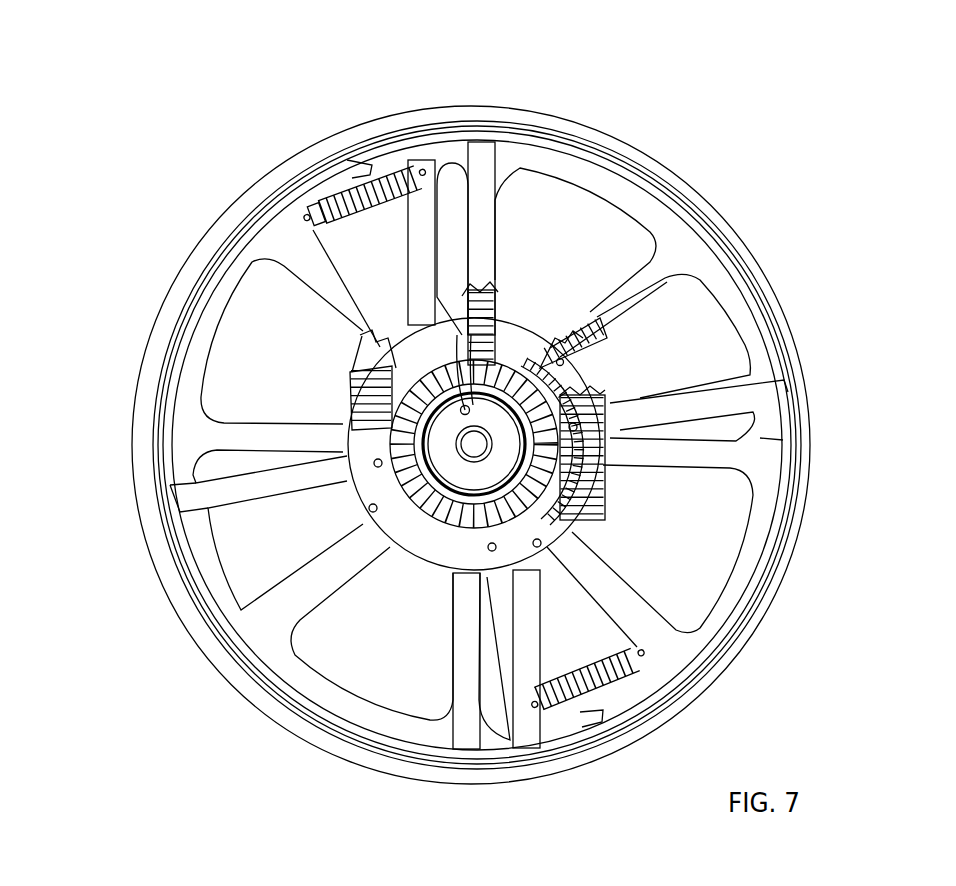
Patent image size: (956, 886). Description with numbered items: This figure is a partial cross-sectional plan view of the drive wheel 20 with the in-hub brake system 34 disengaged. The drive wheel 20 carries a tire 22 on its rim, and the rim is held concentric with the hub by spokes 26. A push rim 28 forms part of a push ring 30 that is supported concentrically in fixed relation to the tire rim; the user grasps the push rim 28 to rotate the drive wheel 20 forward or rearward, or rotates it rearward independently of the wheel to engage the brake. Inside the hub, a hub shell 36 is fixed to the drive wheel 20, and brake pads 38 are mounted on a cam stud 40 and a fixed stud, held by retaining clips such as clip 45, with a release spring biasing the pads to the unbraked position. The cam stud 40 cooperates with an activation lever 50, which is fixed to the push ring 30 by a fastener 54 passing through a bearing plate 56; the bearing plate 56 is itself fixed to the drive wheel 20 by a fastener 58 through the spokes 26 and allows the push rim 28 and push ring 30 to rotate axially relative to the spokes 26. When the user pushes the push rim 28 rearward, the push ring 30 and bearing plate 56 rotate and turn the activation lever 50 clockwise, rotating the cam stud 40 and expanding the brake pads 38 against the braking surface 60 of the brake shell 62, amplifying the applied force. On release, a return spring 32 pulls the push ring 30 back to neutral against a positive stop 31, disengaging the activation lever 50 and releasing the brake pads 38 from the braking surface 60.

The drive wheel 20 is at (185, 195).
The tire 22 is at (180, 297).
The spokes 26 is at (240, 437).
The push rim 28 is at (177, 348).
The push ring 30 is at (192, 498).
The positive stop 31 is at (353, 163).
The return spring 32 is at (333, 212).
The in-hub brake system 34 is at (645, 496).
The hub shell 36 is at (490, 370).
The brake pads 38 is at (520, 465).
The cam stud 40 is at (467, 410).
The retaining clip 45 is at (484, 467).
The activation lever 50 is at (468, 355).
The fastener 54 is at (455, 345).
The bearing plate 56 is at (357, 405).
The fastener 58 is at (560, 362).
The braking surface 60 is at (517, 413).
The brake shell 62 is at (497, 385).